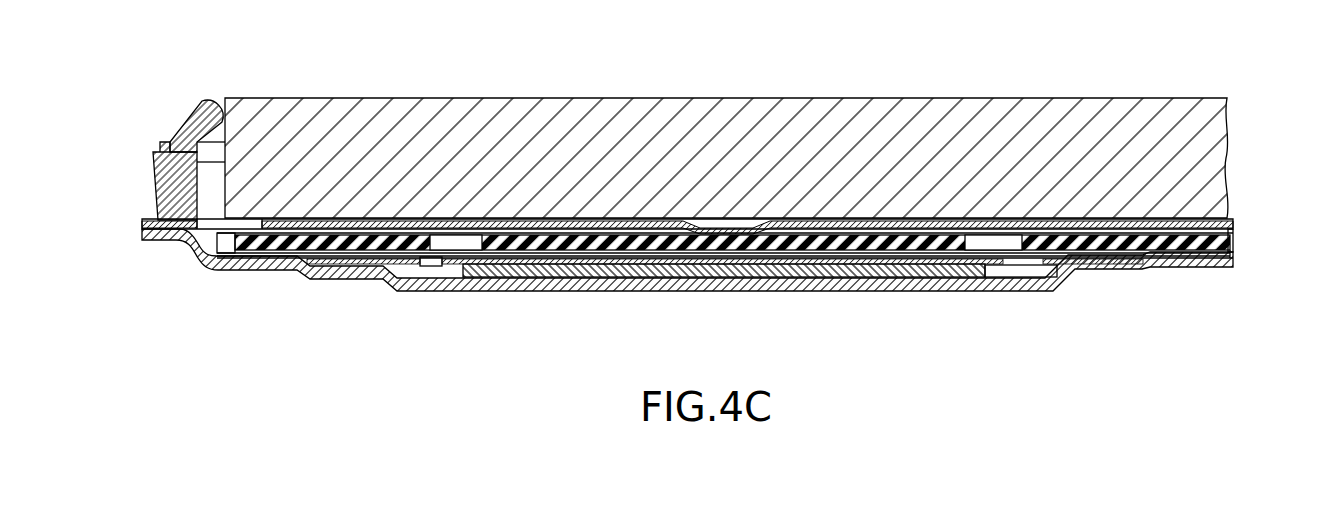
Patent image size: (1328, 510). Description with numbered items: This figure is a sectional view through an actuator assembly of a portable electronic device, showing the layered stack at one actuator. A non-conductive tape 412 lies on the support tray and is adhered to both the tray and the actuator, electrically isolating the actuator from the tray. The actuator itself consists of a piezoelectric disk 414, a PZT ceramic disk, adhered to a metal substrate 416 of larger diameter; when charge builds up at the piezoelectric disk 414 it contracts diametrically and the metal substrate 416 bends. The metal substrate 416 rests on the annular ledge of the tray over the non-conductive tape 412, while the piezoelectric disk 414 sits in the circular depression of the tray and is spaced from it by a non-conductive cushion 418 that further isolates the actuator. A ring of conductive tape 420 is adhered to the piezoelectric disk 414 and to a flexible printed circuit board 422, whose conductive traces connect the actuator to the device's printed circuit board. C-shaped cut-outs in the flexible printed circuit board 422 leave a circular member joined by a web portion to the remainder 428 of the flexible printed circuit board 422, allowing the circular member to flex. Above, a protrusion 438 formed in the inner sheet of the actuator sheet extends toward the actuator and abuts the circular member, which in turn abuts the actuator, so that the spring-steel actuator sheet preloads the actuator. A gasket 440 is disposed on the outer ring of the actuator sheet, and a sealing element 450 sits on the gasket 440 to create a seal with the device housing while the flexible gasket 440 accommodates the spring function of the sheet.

The non-conductive tape 412 is at (338, 262).
The piezoelectric disk 414 is at (457, 262).
The metal substrate 416 is at (424, 258).
The non-conductive cushion 418 is at (533, 272).
The ring of conductive tape 420 is at (370, 248).
The flexible printed circuit board 422 is at (816, 251).
The remainder of the flexible printed circuit board 428 is at (1232, 239).
The protrusion 438 is at (848, 221).
The gasket 440 is at (158, 216).
The sealing element 450 is at (157, 177).